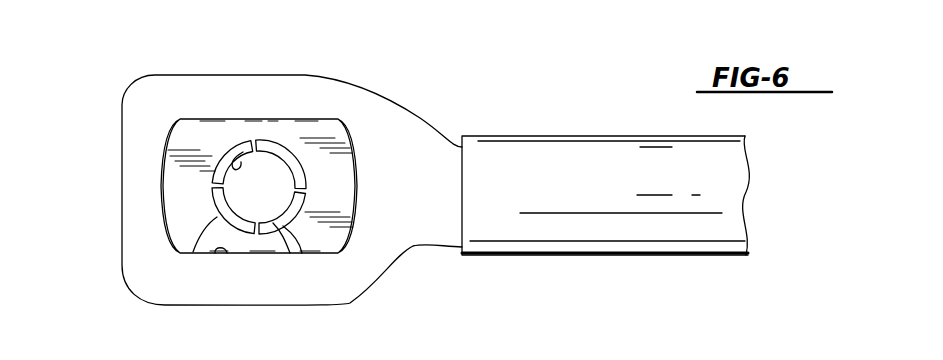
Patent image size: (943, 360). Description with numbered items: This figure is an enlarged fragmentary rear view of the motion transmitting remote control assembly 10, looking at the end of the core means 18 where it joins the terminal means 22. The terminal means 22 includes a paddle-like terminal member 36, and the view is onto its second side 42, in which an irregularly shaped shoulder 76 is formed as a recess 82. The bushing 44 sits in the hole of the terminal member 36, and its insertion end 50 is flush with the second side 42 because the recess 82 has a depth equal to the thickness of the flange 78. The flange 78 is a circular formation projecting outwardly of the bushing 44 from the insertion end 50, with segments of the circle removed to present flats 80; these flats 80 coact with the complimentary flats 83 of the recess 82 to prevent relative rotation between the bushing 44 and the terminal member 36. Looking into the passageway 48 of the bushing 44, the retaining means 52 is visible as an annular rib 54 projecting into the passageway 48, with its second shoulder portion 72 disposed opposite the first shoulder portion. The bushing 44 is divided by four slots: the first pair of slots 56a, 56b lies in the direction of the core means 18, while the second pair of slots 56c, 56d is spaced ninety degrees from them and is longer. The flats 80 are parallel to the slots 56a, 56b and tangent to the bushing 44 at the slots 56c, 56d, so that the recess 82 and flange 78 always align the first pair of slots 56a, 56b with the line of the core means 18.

The motion transmitting remote control assembly 10 is at (441, 130).
The core means 18 is at (601, 136).
The terminal means 22 is at (122, 100).
The terminal member 36 is at (155, 75).
The second side 42 is at (407, 243).
The bushing 44 is at (330, 115).
The passageway 48 is at (233, 227).
The insertion end 50 is at (291, 253).
The retaining means 52 is at (293, 141).
The annular rib 54 is at (243, 152).
The slot 56a is at (212, 188).
The slot 56b is at (306, 191).
The slot 56c is at (262, 235).
The slot 56d is at (252, 140).
The second shoulder portion 72 is at (300, 254).
The irregularly shaped shoulder 76 is at (367, 293).
The flange 78 is at (347, 138).
The flats 80 is at (190, 254).
The recess 82 is at (167, 154).
The complimentary flats 83 is at (229, 254).